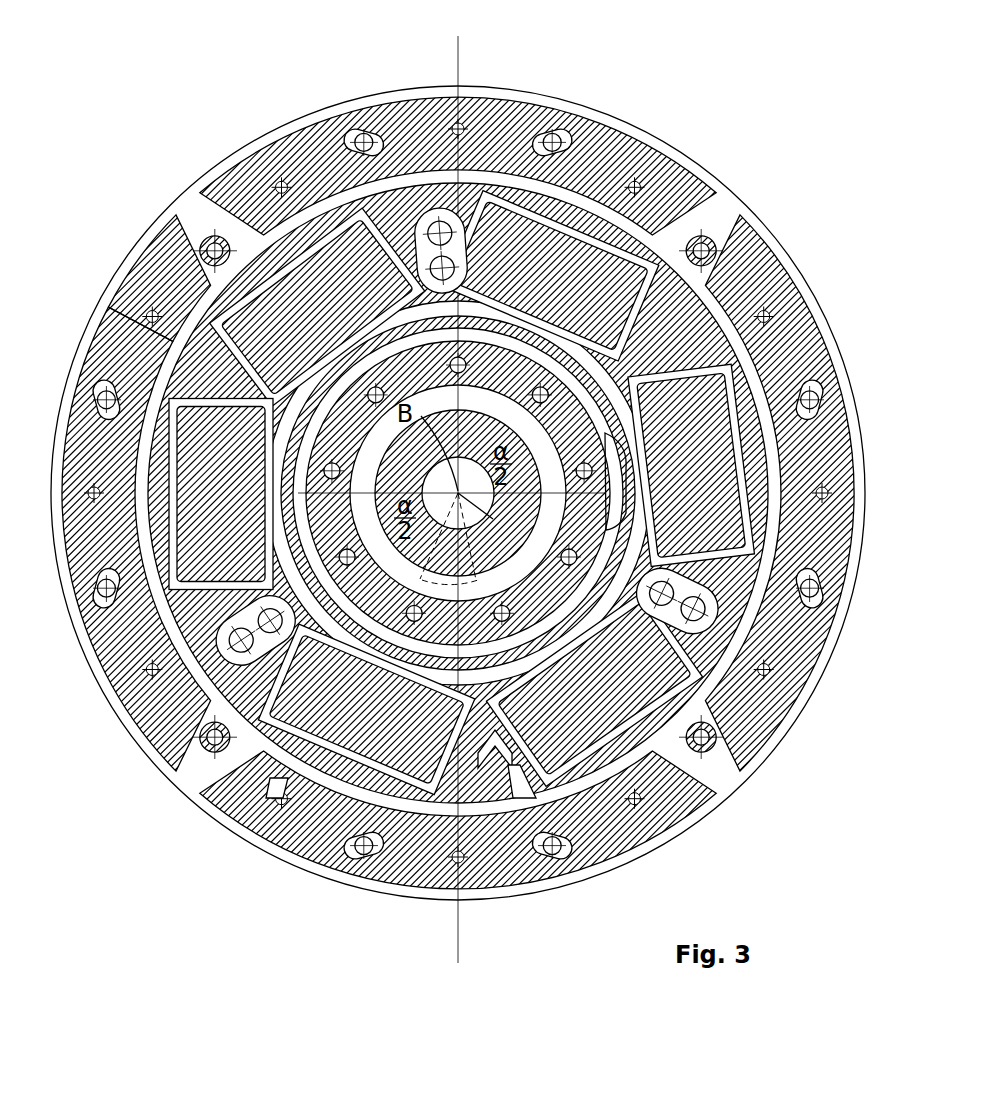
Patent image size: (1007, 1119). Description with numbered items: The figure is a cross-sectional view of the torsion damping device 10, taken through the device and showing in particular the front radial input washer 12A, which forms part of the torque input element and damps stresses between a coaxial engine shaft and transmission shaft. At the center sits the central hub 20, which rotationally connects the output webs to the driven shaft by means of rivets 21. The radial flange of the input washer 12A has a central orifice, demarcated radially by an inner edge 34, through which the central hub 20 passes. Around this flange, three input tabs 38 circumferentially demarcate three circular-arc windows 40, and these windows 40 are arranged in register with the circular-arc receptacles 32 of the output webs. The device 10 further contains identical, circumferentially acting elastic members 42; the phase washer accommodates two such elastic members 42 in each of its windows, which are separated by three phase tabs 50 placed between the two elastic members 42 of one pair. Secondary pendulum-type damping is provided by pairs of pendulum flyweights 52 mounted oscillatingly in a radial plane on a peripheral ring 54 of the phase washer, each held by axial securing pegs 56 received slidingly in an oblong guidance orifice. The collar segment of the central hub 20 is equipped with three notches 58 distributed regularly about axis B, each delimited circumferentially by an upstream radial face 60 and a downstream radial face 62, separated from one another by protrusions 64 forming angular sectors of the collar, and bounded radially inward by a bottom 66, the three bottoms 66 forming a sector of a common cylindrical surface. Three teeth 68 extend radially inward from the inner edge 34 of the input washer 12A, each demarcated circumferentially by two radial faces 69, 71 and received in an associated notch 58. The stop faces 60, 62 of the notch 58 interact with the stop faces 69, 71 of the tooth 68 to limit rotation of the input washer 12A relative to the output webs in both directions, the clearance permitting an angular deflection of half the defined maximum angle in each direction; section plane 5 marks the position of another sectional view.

The torsion damping device 10 is at (738, 140).
The front radial input washer 12A is at (492, 205).
The central hub 20 is at (583, 423).
The rivets 21 is at (488, 742).
The receptacle 32 is at (337, 753).
The inner edge 34 is at (183, 700).
The input tabs 38 is at (393, 223).
The circular-arc windows 40 is at (685, 322).
The elastic members 42 is at (270, 780).
The phase tabs 50 is at (500, 765).
The pendulum flyweights 52 is at (428, 108).
The peripheral ring 54 is at (724, 220).
The axial securing pegs 56 is at (567, 110).
The notches 58 is at (165, 352).
The upstream radial face 60 is at (152, 372).
The downstream radial face 62 is at (450, 449).
The protrusions 64 is at (662, 212).
The bottom 66 is at (317, 367).
The teeth 68 is at (610, 473).
The radial face 69 is at (627, 447).
The radial face 71 is at (580, 508).
The section line 5 is at (450, 50).